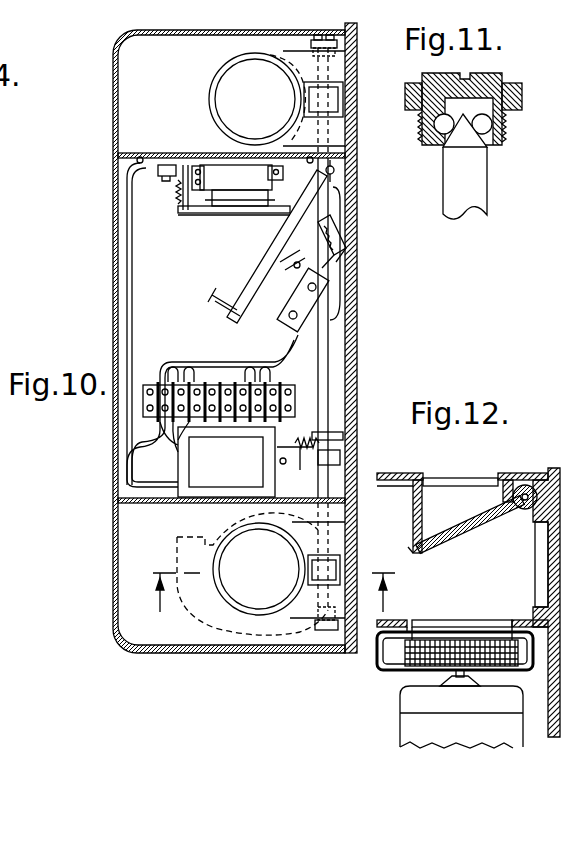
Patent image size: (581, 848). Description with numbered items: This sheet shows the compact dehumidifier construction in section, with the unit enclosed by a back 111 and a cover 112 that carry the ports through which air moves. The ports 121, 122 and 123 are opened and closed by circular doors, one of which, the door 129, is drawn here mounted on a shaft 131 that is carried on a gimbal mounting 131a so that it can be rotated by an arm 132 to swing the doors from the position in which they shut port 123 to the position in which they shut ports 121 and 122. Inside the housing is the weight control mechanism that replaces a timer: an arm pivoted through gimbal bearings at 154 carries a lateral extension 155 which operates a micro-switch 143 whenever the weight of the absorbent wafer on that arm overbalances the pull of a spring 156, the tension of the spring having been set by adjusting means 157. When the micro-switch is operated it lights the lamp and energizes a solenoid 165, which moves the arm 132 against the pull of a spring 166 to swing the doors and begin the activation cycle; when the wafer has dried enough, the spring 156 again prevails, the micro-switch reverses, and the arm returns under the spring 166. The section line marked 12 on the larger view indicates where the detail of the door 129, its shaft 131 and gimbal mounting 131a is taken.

In FIG. 10, the back 111 is at (357, 318).
In FIG. 10, the cover 112 is at (115, 322).
In FIG. 10, the port 121 is at (261, 574).
In FIG. 12, the port 121 is at (478, 478).
In FIG. 10, the port 122 is at (277, 98).
In FIG. 12, the port 123 is at (538, 575).
In FIG. 12, the circular door 129 is at (452, 537).
In FIG. 10, the shaft 131 is at (332, 388).
In FIG. 10, the gimbal mounting 131a is at (318, 631).
In FIG. 11, the gimbal mounting 131a is at (504, 143).
In FIG. 10, the arm 132 is at (343, 450).
In FIG. 10, the micro-switch 143 is at (295, 320).
In FIG. 10, the pivot 154 is at (335, 170).
In FIG. 10, the lateral extension 155 is at (272, 243).
In FIG. 10, the spring 156 is at (355, 235).
In FIG. 10, the adjusting means 157 is at (345, 255).
In FIG. 10, the solenoid 165 is at (226, 462).
In FIG. 10, the spring 166 is at (298, 444).
In FIG. 10, the section line 12 is at (275, 582).